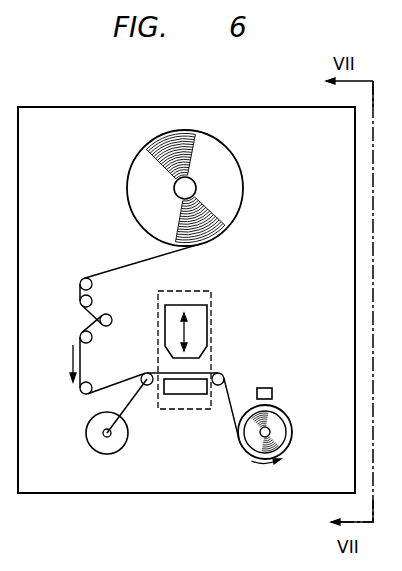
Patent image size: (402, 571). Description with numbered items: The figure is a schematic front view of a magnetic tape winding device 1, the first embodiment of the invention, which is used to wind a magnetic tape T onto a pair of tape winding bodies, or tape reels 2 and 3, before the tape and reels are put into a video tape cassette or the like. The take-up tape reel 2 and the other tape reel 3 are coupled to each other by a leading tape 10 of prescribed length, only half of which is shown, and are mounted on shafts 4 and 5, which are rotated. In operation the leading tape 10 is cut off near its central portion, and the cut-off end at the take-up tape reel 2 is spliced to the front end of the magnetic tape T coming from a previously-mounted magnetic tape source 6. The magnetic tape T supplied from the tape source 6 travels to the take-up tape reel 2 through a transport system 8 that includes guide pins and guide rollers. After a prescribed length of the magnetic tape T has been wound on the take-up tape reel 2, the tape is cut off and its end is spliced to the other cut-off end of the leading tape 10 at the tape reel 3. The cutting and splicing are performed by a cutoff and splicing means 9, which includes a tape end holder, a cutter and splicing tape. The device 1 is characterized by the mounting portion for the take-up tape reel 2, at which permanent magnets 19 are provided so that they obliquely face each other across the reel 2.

The magnetic tape winding device 1 is at (242, 107).
The take-up tape reel 2 is at (280, 412).
The tape reel 3 is at (92, 448).
The shaft 4 is at (270, 432).
The shaft 5 is at (110, 437).
The magnetic tape source 6 is at (243, 193).
The transport system 8 is at (76, 293).
The cutoff and splicing means 9 is at (212, 320).
The leading tape 10 is at (130, 400).
The permanent magnets 19 is at (265, 387).
The magnetic tape T is at (127, 263).